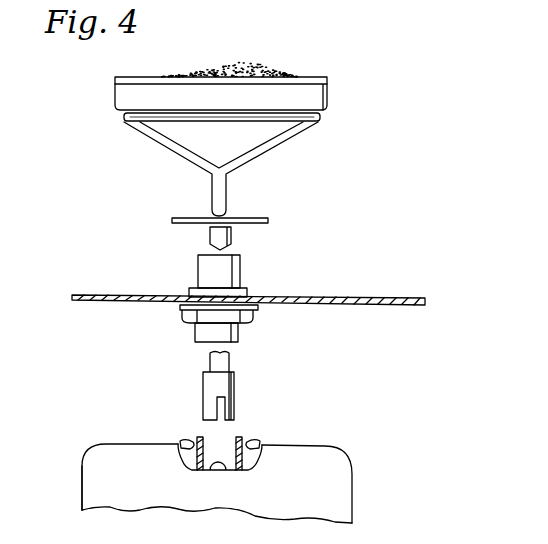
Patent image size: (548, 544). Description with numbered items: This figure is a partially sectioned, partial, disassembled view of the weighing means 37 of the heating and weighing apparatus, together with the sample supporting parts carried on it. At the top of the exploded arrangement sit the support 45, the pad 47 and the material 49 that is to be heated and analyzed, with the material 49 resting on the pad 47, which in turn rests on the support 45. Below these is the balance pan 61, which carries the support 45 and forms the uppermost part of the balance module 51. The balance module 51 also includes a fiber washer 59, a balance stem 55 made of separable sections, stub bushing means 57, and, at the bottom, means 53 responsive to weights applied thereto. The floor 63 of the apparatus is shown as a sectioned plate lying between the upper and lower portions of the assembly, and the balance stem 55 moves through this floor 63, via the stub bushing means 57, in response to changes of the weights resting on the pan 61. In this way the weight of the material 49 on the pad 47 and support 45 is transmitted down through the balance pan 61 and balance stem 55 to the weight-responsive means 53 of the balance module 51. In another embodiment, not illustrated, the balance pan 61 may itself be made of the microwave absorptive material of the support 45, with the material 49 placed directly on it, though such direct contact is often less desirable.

The weighing means 37 is at (333, 445).
The support 45 is at (322, 114).
The pad 47 is at (330, 84).
The material 49 is at (247, 67).
The balance module 51 is at (82, 467).
The means responsive to weights 53 is at (213, 466).
The balance stem 55 is at (208, 239).
The stub bushing means 57 is at (180, 306).
The fiber washer 59 is at (230, 218).
The balance pan 61 is at (186, 160).
The floor 63 is at (406, 306).